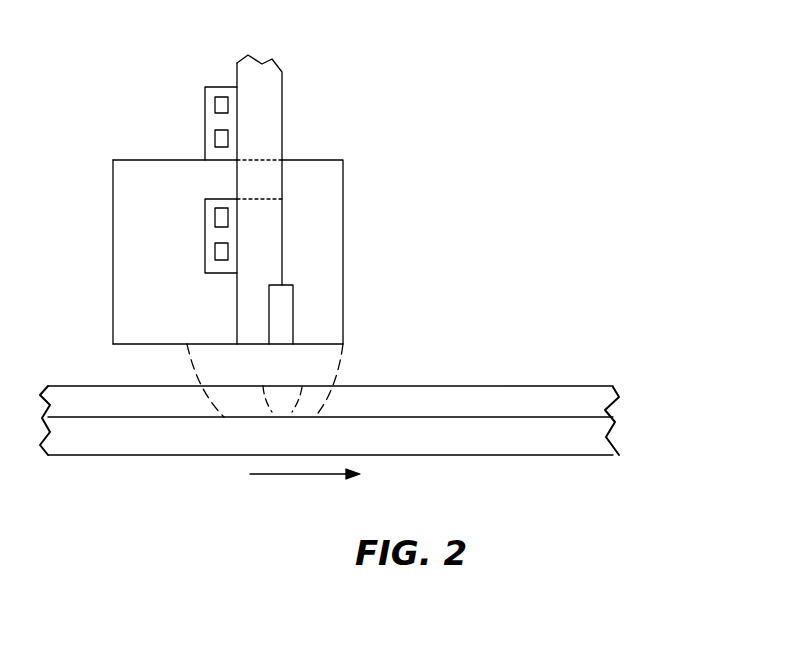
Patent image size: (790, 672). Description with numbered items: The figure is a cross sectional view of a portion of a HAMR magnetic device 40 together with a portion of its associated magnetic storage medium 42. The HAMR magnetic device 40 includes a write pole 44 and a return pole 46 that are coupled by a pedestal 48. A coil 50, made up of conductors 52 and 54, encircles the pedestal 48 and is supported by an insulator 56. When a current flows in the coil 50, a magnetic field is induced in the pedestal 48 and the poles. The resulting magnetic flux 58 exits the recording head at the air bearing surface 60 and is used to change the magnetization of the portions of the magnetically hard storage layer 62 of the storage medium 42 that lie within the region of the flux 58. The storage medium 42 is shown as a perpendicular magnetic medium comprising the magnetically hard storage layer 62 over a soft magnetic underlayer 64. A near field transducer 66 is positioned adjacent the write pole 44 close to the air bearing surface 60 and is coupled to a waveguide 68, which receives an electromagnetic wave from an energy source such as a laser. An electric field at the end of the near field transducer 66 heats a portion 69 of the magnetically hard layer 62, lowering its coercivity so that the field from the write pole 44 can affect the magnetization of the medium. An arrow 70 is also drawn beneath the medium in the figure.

The HAMR magnetic device 40 is at (442, 82).
The magnetic storage medium 42 is at (620, 355).
The write pole 44 is at (320, 203).
The return pole 46 is at (135, 282).
The pedestal 48 is at (265, 182).
The coil 50 is at (190, 72).
The conductor 52 is at (208, 218).
The conductor 54 is at (208, 106).
The insulator 56 is at (213, 87).
The magnetic flux 58 is at (335, 378).
The air bearing surface 60 is at (130, 344).
The magnetically hard storage layer 62 is at (572, 407).
The soft magnetic underlayer 64 is at (568, 432).
The near field transducer 66 is at (288, 307).
The waveguide 68 is at (258, 123).
The heated portion of magnetically hard layer 69 is at (278, 415).
The travel direction 70 is at (303, 478).